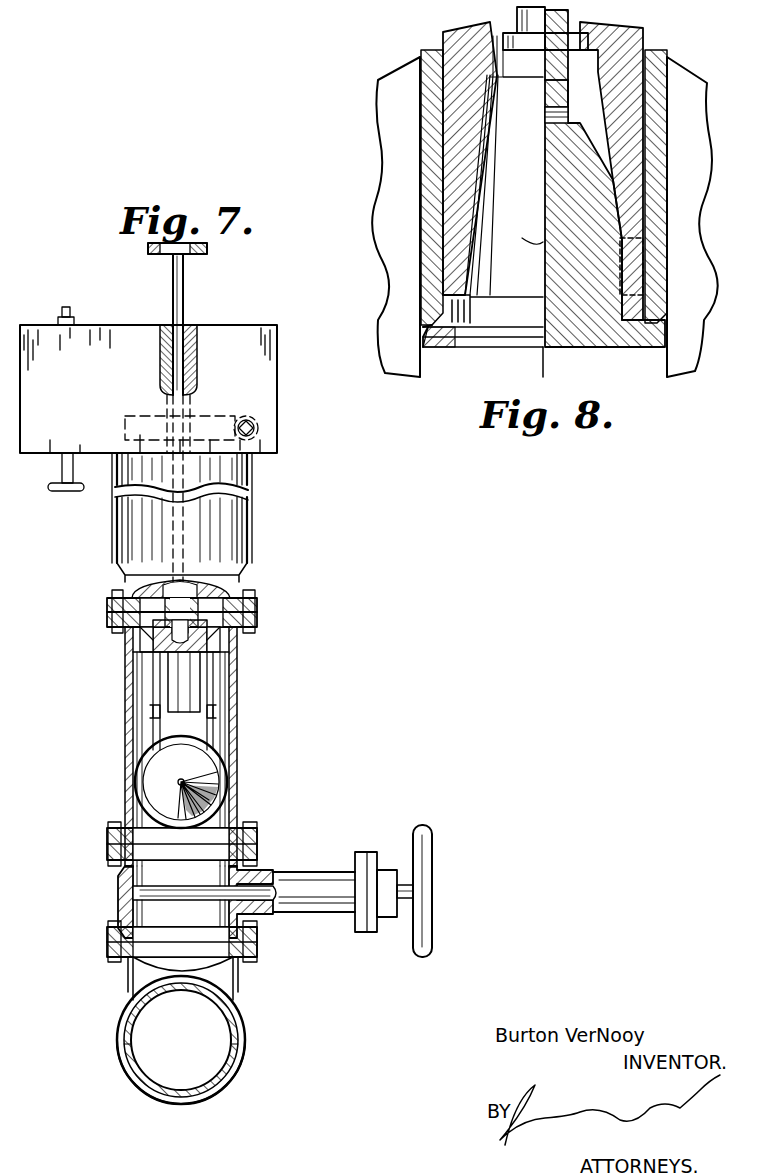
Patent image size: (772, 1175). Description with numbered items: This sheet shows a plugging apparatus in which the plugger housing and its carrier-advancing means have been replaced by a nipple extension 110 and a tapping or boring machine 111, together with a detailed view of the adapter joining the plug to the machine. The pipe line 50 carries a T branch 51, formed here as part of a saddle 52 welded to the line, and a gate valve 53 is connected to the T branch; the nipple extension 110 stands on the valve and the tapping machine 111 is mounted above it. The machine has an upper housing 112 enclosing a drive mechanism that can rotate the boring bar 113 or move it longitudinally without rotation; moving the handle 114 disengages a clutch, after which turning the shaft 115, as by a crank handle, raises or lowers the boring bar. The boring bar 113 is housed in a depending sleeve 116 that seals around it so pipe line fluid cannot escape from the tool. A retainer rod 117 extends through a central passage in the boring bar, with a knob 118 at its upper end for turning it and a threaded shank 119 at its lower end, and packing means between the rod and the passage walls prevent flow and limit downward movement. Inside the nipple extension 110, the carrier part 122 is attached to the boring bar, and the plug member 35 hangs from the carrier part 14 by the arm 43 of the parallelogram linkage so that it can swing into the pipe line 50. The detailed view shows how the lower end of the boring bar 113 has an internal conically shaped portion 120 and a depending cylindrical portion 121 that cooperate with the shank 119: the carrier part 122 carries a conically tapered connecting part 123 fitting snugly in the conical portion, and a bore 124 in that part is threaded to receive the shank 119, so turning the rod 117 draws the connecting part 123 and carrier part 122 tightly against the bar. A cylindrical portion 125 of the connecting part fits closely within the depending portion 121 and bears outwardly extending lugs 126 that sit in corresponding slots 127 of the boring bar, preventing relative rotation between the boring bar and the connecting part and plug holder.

In FIG. 7, the carrier part 14 is at (203, 668).
In FIG. 7, the plug member 35 is at (160, 779).
In FIG. 7, the arm 43 is at (178, 700).
In FIG. 7, the pipe line 50 is at (237, 1027).
In FIG. 7, the T branch 51 is at (143, 982).
In FIG. 7, the saddle 52 is at (137, 1078).
In FIG. 7, the gate valve 53 is at (118, 898).
In FIG. 7, the nipple extension 110 is at (240, 731).
In FIG. 7, the tapping or boring machine 111 is at (250, 528).
In FIG. 7, the upper housing 112 is at (262, 392).
In FIG. 7, the boring bar 113 is at (165, 547).
In FIG. 8, the boring bar 113 is at (457, 122).
In FIG. 7, the handle 114 is at (50, 497).
In FIG. 7, the shaft 115 is at (72, 315).
In FIG. 7, the depending sleeve 116 is at (225, 512).
In FIG. 7, the retainer rod 117 is at (186, 302).
In FIG. 8, the retainer rod 117 is at (548, 57).
In FIG. 7, the knob 118 is at (208, 250).
In FIG. 8, the threaded shank 119 is at (548, 86).
In FIG. 8, the internal conically shaped portion 120 is at (460, 182).
In FIG. 8, the depending cylindrical portion 121 is at (445, 262).
In FIG. 7, the carrier part 122 is at (218, 650).
In FIG. 8, the carrier part 122 is at (688, 280).
In FIG. 8, the conically tapered connecting part 123 is at (553, 164).
In FIG. 8, the threaded bore 124 is at (543, 124).
In FIG. 8, the cylindrical portion 125 is at (500, 278).
In FIG. 8, the lugs 126 is at (673, 243).
In FIG. 8, the slots 127 is at (682, 213).